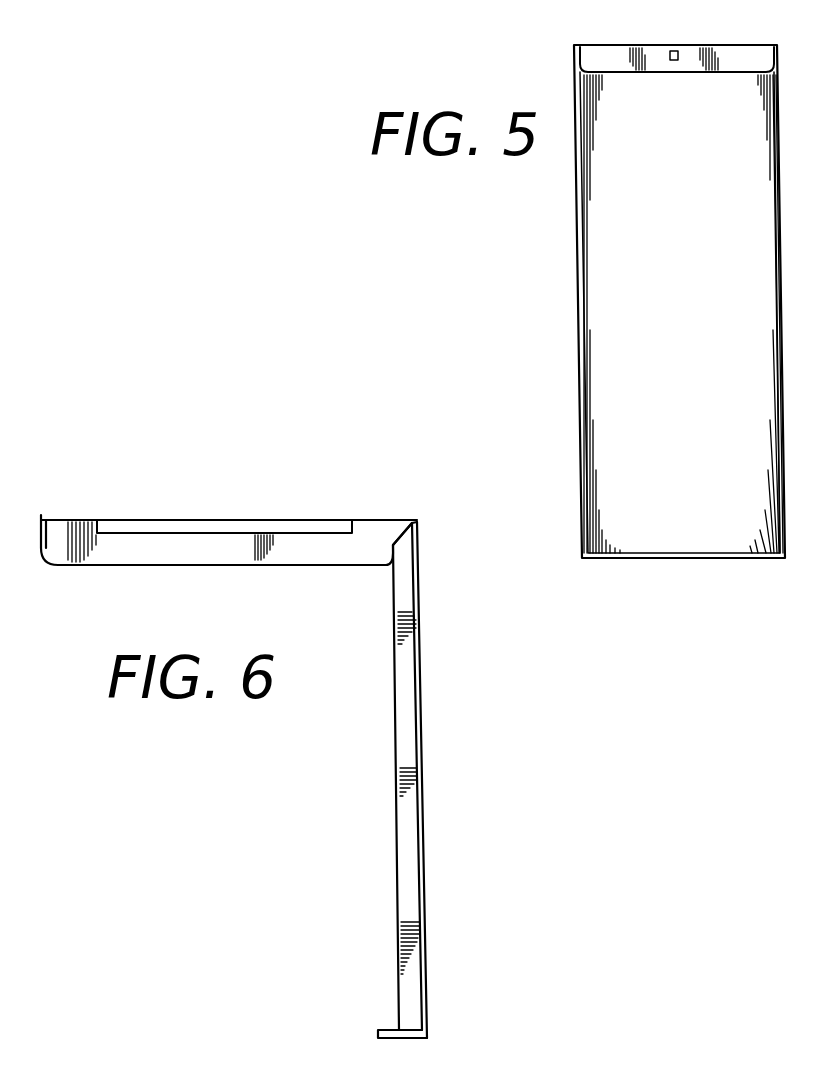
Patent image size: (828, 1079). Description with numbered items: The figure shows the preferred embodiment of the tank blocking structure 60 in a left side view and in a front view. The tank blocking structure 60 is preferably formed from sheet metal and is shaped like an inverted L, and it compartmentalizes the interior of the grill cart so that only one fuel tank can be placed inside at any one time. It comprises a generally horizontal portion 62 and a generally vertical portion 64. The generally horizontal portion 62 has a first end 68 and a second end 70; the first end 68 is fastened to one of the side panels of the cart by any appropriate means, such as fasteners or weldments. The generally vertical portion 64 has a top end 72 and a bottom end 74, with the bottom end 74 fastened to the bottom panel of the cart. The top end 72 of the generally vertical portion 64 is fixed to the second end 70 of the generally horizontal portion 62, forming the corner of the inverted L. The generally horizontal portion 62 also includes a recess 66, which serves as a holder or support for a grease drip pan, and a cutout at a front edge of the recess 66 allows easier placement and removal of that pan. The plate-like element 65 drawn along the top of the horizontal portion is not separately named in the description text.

In FIG. 5, the tank blocking structure 60 is at (575, 244).
In FIG. 6, the tank blocking structure 60 is at (431, 561).
In FIG. 5, the generally horizontal portion 62 is at (604, 58).
In FIG. 6, the generally horizontal portion 62 is at (226, 552).
In FIG. 5, the generally vertical portion 64 is at (702, 284).
In FIG. 6, the generally vertical portion 64 is at (412, 852).
In FIG. 6, the top plate 65 is at (298, 530).
In FIG. 6, the recess 66 is at (178, 516).
In FIG. 6, the first end 68 is at (67, 548).
In FIG. 6, the second end 70 is at (396, 532).
In FIG. 6, the top end 72 is at (403, 552).
In FIG. 6, the bottom end 74 is at (410, 1026).